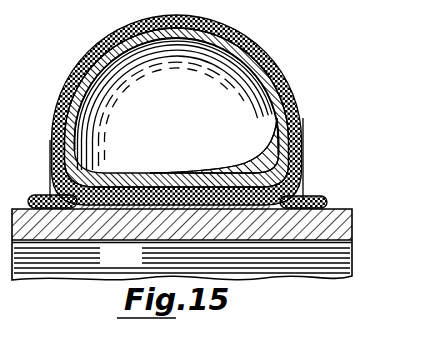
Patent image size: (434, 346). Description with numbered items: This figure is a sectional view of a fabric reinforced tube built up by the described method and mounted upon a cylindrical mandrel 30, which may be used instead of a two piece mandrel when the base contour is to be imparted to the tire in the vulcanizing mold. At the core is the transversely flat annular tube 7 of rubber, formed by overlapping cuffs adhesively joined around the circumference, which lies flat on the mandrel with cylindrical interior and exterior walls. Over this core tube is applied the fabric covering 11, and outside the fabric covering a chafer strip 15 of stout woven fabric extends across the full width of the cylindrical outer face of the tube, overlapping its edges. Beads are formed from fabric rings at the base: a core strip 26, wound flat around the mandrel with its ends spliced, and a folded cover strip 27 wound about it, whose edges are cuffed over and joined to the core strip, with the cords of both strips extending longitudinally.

The annular tube 7 is at (272, 82).
The fabric covering 11 is at (281, 59).
The chafer strip 15 is at (303, 132).
The core strip 26 is at (303, 199).
The cover strip 27 is at (326, 207).
The cylindrical mandrel 30 is at (103, 234).